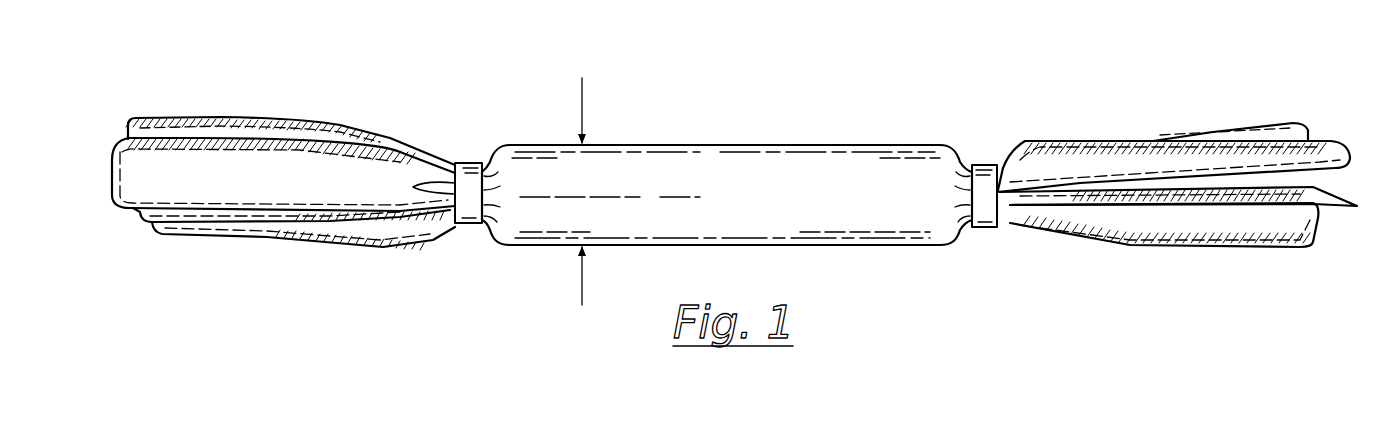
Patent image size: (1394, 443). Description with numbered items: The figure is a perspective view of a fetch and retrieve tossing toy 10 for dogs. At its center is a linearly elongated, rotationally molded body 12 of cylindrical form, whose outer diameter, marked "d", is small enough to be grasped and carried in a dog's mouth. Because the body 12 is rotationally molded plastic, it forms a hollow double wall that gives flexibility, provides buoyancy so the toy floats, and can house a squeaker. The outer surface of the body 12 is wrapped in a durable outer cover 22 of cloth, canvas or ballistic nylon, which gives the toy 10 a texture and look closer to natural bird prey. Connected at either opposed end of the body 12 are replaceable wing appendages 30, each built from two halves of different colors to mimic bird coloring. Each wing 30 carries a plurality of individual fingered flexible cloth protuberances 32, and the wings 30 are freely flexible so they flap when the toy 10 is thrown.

The fetch and retrieve tossing toy 10 is at (782, 72).
The body 12 is at (866, 227).
The outer cover 22 is at (842, 184).
The wing appendages 30 is at (226, 153).
The fingered flexible cloth protuberances 32 is at (1180, 218).